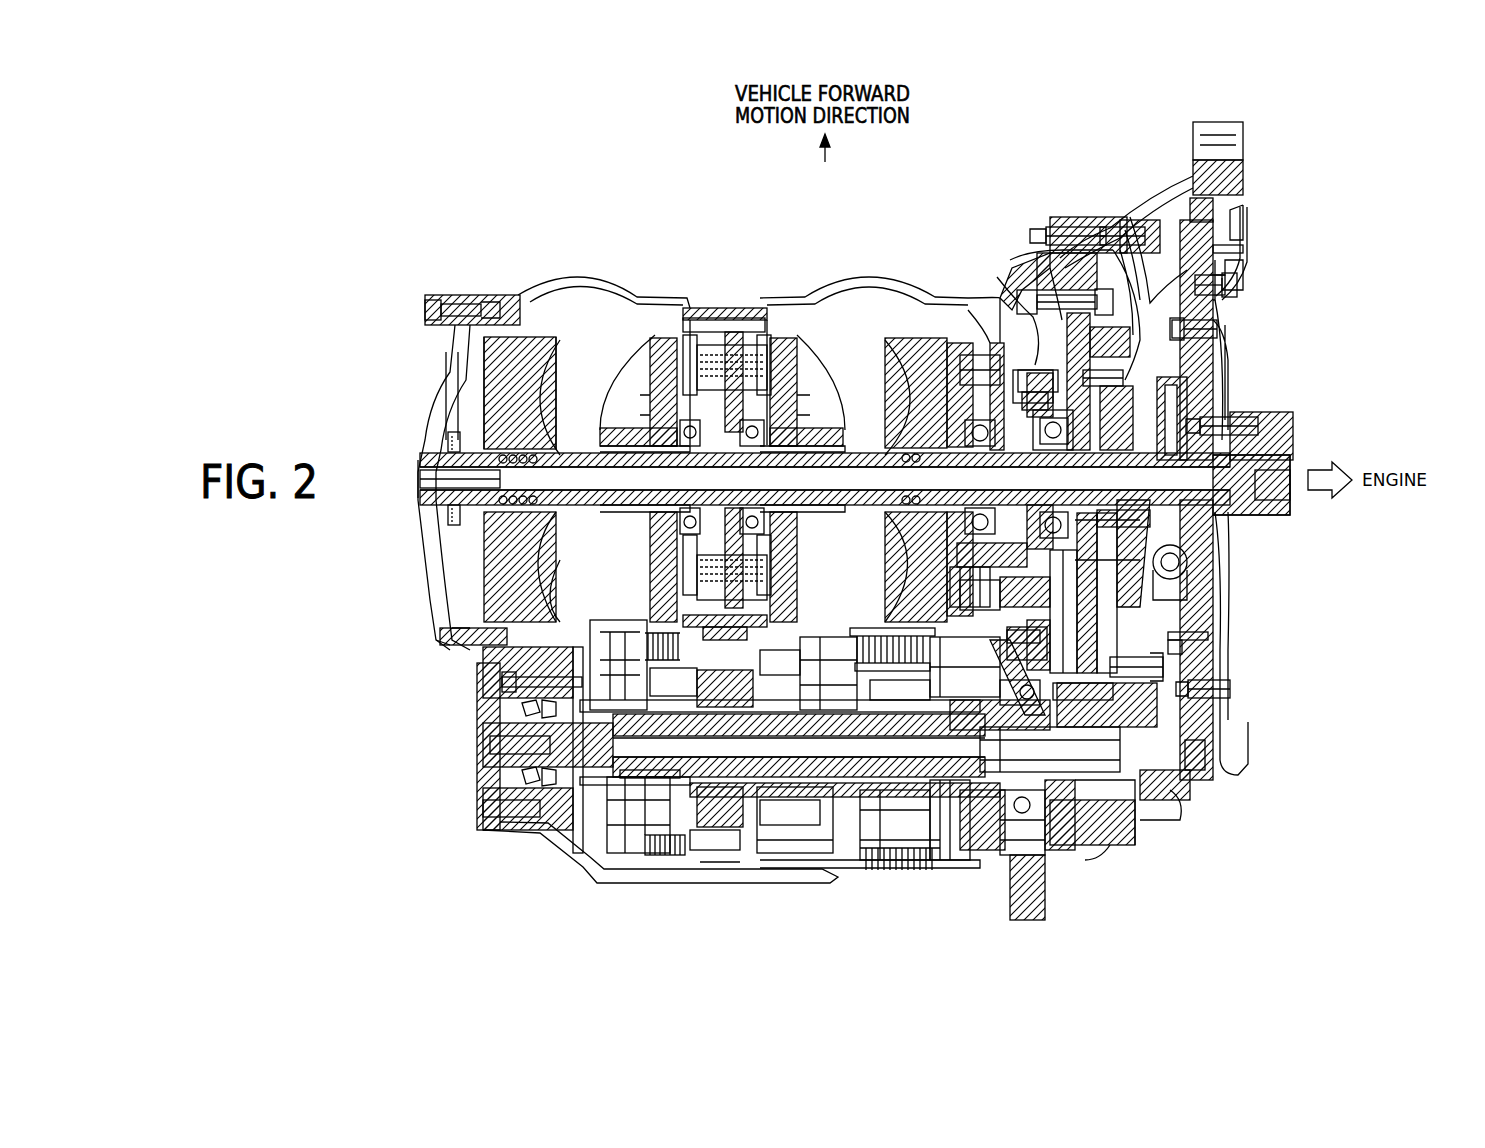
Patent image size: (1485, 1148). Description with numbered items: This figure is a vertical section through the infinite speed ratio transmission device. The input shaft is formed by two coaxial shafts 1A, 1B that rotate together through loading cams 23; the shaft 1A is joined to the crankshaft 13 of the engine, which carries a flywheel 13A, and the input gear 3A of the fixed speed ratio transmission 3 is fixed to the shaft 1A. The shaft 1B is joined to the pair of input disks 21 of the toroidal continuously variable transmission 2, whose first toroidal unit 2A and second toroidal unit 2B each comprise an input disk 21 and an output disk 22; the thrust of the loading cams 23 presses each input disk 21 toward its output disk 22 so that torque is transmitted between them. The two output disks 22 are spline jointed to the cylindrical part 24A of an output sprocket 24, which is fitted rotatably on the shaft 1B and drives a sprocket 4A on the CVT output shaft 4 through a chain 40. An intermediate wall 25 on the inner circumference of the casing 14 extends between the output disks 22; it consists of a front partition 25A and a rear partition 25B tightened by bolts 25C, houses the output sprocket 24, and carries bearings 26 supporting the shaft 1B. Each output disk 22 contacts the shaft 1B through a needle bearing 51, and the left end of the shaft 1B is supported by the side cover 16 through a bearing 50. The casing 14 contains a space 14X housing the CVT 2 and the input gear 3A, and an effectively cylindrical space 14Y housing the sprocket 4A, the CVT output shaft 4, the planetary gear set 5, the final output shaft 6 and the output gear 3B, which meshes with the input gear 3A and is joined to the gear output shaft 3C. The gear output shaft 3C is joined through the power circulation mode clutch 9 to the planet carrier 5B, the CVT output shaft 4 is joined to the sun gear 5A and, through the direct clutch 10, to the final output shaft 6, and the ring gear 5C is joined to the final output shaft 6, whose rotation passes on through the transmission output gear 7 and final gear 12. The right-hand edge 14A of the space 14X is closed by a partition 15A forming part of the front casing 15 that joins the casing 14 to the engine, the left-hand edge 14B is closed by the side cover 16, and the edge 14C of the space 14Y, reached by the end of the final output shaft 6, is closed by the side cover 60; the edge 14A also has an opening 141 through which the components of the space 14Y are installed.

The shaft 1A is at (1210, 520).
The shaft 1B is at (862, 450).
The toroidal continuously variable transmission 2 is at (825, 308).
The first toroidal unit 2A is at (875, 342).
The second toroidal unit 2B is at (578, 342).
The fixed speed ratio transmission 3 is at (1065, 860).
The input gear 3A is at (1025, 300).
The output gear 3B is at (1060, 890).
The gear output shaft 3C is at (946, 810).
The CVT output shaft 4 is at (692, 800).
The sprocket 4A is at (744, 822).
The planetary gear set 5 is at (805, 870).
The sun gear 5A is at (832, 865).
The planet carrier 5B is at (798, 656).
The ring gear 5C is at (760, 845).
The final output shaft 6 is at (1200, 758).
The transmission output gear 7 is at (1182, 688).
The power circulation mode clutch 9 is at (906, 630).
The direct clutch 10 is at (625, 630).
The final gear 12 is at (1108, 848).
The crankshaft 13 is at (1282, 436).
The flywheel 13A is at (1222, 750).
The casing 14 is at (500, 300).
The edge 14A is at (1036, 392).
The edge 14B is at (458, 622).
The edge 14C is at (478, 780).
The space 14X is at (572, 620).
The space 14Y is at (732, 840).
The opening 141 is at (893, 875).
The front casing 15 is at (1150, 200).
The partition 15A is at (1222, 318).
The side cover 16 is at (440, 395).
The input disk 21 is at (944, 370).
The output disk 22 is at (788, 365).
The loading cams 23 is at (972, 360).
The output sprocket 24 is at (742, 312).
The cylindrical part 24A is at (790, 440).
The intermediate wall 25 is at (665, 330).
The front partition 25A is at (790, 562).
The rear partition 25B is at (680, 562).
The bolts 25C is at (776, 320).
The bearings 26 is at (787, 420).
The chain 40 is at (716, 345).
The bearing 50 is at (432, 456).
The needle bearing 51 is at (715, 538).
The side cover 60 is at (476, 700).